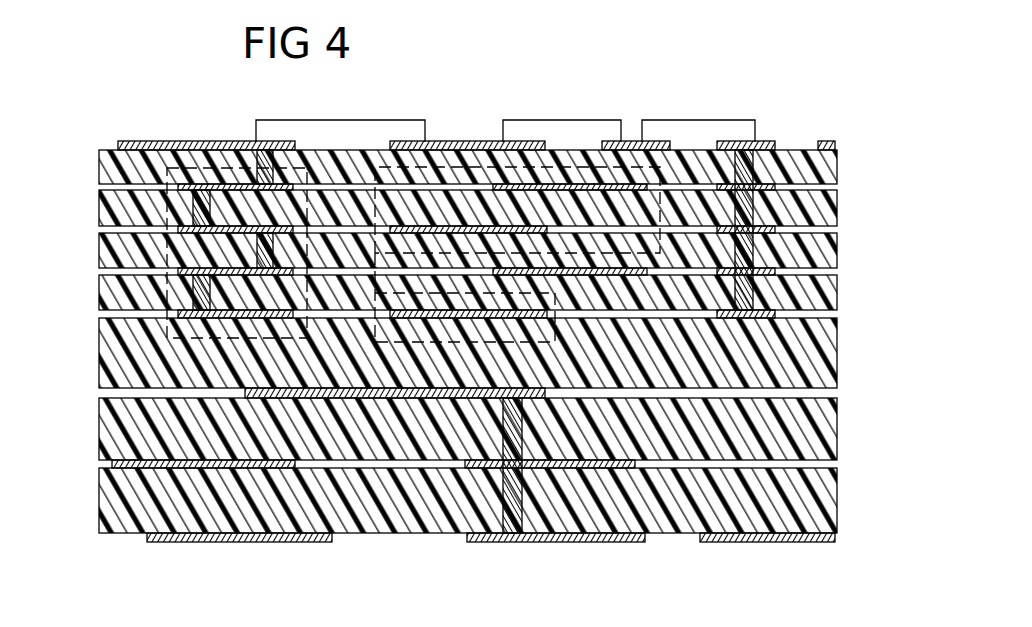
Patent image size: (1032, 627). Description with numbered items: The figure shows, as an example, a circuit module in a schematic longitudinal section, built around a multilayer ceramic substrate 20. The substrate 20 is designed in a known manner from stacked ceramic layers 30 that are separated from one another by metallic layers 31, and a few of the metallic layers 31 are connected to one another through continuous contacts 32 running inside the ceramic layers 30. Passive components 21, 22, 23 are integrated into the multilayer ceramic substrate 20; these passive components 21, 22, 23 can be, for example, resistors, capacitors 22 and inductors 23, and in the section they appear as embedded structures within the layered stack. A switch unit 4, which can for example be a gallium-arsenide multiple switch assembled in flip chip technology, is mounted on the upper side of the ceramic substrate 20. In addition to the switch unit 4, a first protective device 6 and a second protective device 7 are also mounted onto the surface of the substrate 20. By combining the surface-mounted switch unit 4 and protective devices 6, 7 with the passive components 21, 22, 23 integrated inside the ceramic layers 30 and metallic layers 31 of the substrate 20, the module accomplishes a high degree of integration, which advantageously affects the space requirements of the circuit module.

The multilayer ceramic substrate 20 is at (121, 112).
The switch unit 4 is at (700, 128).
The first protective device 6 is at (572, 128).
The second protective device 7 is at (385, 128).
The capacitor 22 is at (470, 160).
The inductor 23 is at (196, 162).
The ceramic layer 30 is at (807, 352).
The passive component 21 is at (418, 342).
The metallic layer 31 is at (453, 397).
The continuous contact 32 is at (517, 443).